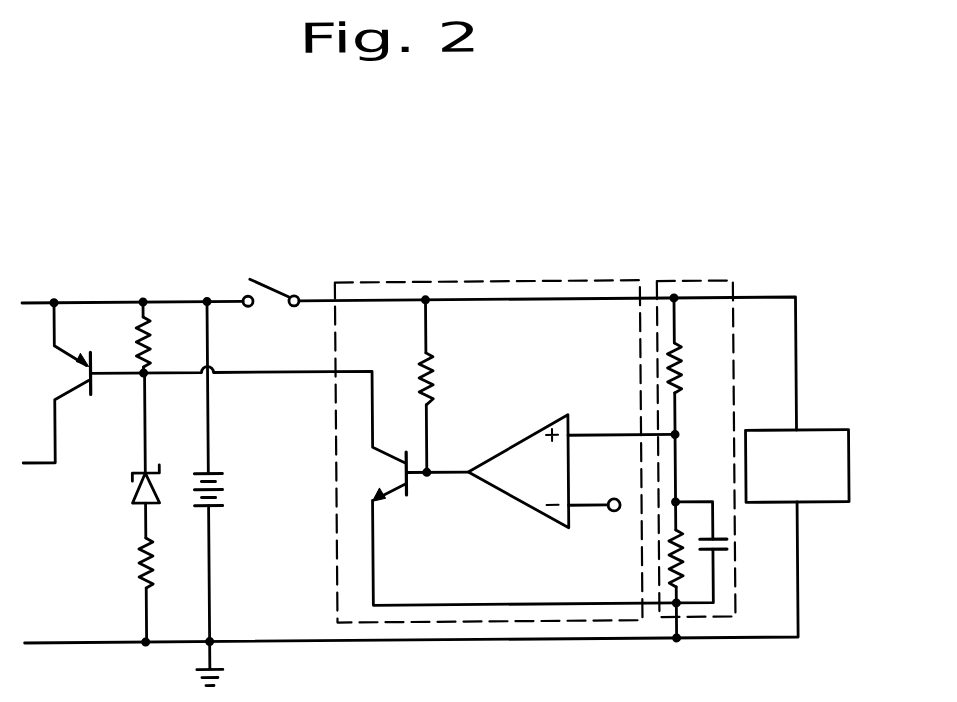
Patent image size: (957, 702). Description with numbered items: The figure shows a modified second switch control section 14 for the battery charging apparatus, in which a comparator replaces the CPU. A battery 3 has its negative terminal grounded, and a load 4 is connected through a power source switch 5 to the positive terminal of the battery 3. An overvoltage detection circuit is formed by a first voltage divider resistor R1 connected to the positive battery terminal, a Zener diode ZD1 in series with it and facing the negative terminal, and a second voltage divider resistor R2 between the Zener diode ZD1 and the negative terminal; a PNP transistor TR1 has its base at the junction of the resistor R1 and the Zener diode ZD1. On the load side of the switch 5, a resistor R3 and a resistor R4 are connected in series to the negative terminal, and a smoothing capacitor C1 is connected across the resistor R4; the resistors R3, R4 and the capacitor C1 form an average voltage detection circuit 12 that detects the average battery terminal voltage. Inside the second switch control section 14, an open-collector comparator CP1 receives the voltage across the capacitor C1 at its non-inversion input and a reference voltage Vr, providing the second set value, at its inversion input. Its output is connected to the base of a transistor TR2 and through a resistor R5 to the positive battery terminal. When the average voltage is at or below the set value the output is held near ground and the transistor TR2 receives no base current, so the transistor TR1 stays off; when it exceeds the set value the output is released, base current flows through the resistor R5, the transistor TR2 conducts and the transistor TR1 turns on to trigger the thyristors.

The PNP transistor TR1 is at (66, 348).
The first voltage divider resistor R1 is at (152, 335).
The power source switch 5 is at (263, 280).
The battery 3 is at (222, 484).
The Zener diode ZD1 is at (132, 493).
The second voltage divider resistor R2 is at (137, 564).
The second switch control section 14 is at (546, 286).
The resistor R5 is at (435, 381).
The comparator CP1 is at (521, 446).
The reference voltage Vr is at (619, 482).
The transistor TR2 is at (388, 502).
The average voltage detection circuit 12 is at (690, 285).
The resistor R3 is at (682, 366).
The load 4 is at (827, 436).
The smoothing capacitor C1 is at (726, 549).
The resistor R4 is at (683, 557).